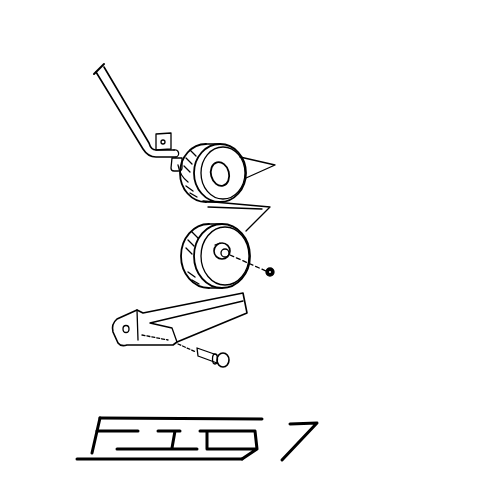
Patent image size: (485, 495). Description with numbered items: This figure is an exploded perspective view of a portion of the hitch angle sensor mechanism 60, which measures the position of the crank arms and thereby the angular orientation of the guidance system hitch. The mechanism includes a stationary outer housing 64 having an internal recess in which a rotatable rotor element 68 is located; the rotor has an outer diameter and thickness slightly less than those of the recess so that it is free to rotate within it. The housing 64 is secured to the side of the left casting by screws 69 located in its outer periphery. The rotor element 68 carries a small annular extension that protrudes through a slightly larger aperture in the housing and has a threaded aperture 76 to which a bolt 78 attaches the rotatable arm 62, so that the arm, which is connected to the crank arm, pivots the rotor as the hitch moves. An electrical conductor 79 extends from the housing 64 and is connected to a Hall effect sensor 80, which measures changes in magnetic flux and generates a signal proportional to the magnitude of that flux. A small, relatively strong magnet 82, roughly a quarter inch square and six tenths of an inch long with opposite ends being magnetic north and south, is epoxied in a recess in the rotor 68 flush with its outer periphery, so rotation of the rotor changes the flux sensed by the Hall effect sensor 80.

The hitch angle sensor mechanism 60 is at (82, 190).
The rotatable arm 62 is at (233, 323).
The stationary outer housing 64 is at (235, 138).
The rotatable rotor element 68 is at (262, 208).
The screws 69 is at (275, 165).
The threaded aperture 76 is at (213, 257).
The bolt 78 is at (274, 271).
The electrical conductor 79 is at (119, 97).
The Hall effect sensor 80 is at (180, 172).
The magnet 82 is at (163, 197).